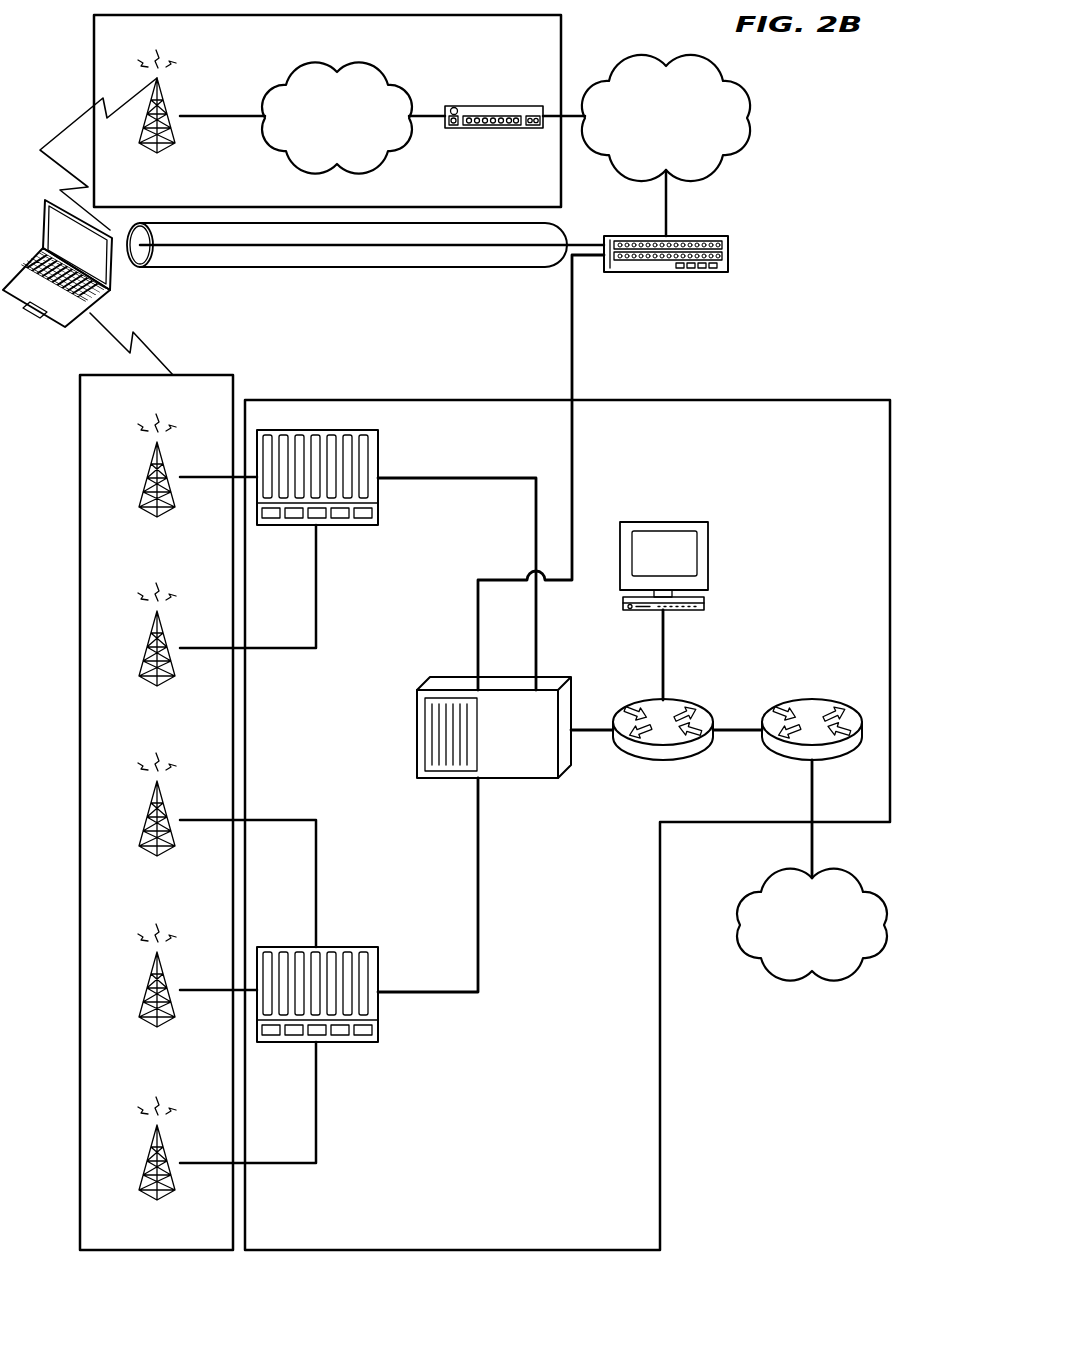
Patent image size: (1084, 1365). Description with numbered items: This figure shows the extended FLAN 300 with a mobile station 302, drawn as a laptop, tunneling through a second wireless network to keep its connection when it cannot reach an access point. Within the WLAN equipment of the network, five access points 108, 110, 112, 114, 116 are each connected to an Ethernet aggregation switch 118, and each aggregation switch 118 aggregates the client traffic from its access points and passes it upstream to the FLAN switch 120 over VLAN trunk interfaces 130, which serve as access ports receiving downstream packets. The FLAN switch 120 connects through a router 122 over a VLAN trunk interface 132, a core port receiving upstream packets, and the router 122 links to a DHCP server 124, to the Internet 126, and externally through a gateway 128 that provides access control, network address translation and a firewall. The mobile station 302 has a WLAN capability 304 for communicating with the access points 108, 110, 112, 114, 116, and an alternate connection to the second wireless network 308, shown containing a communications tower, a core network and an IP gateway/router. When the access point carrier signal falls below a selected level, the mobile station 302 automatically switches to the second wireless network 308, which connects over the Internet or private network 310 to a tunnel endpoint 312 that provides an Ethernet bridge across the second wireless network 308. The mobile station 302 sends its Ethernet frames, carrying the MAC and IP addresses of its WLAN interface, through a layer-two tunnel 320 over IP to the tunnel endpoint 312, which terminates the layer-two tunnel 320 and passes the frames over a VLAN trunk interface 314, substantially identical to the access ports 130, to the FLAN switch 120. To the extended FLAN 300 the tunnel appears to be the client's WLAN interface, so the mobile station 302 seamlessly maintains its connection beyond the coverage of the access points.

The access point 108 is at (163, 460).
The access point 110 is at (163, 630).
The access point 112 is at (163, 800).
The access point 114 is at (163, 972).
The access point 116 is at (163, 1145).
The Ethernet aggregation switch 118 is at (286, 526).
The FLAN switch 120 is at (468, 677).
The router 122 is at (683, 698).
The DHCP server 124 is at (708, 560).
The Internet 126 is at (795, 976).
The gateway 128 is at (787, 760).
The VLAN trunk interface 130 is at (536, 530).
The VLAN trunk interface 132 is at (588, 724).
The extended FLAN 300 is at (815, 1113).
The mobile station 302 is at (47, 320).
The WLAN capability 304 is at (165, 345).
The second wireless network 308 is at (93, 40).
The Internet or private network 310 is at (748, 112).
The tunnel endpoint 312 is at (728, 250).
The VLAN trunk interface 314 is at (572, 455).
The layer 2 tunnel 320 is at (503, 268).